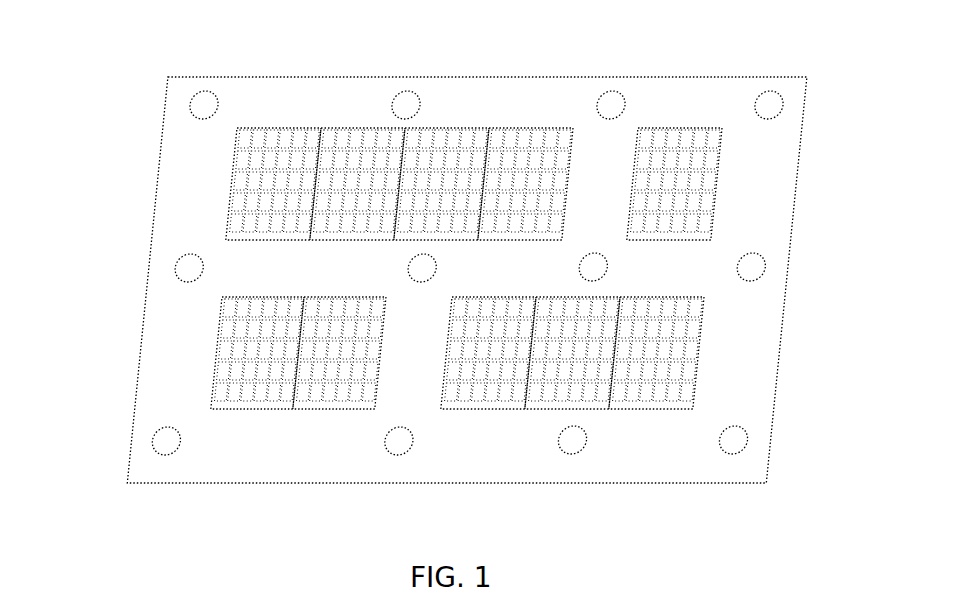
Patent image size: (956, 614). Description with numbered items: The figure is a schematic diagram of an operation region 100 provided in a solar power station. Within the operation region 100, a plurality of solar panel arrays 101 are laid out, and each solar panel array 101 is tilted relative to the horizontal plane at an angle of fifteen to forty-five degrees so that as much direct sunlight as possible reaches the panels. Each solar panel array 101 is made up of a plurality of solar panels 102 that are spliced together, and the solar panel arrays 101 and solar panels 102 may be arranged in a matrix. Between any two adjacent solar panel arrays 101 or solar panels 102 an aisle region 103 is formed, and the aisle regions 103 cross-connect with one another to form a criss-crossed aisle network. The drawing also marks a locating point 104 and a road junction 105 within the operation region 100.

The operation region 100 is at (250, 78).
The solar panel array 101 is at (488, 128).
The solar panel 102 is at (682, 128).
The aisle region 103 is at (187, 183).
The locating point 104 is at (412, 106).
The road junction 105 is at (178, 288).